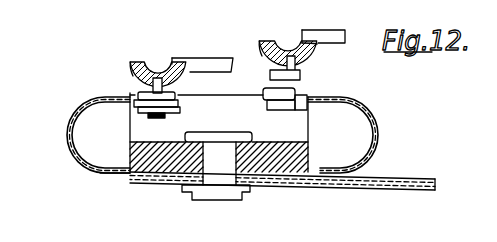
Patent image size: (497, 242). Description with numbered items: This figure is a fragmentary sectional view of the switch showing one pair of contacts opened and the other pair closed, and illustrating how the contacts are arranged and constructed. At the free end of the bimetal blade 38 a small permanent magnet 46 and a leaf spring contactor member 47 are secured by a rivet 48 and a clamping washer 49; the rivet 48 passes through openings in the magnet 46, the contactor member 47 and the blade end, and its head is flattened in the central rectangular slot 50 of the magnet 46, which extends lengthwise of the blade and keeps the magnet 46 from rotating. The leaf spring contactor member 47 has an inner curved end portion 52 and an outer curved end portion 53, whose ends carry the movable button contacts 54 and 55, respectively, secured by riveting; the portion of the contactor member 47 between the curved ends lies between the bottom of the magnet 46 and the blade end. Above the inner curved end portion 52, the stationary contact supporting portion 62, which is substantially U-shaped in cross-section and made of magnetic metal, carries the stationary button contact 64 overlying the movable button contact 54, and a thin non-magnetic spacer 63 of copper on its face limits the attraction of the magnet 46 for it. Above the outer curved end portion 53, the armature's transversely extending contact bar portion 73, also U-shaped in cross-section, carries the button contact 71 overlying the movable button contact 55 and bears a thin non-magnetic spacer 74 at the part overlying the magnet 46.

The bimetal blade 38 is at (372, 189).
The permanent magnet 46 is at (152, 185).
The leaf spring contactor member 47 is at (113, 175).
The rivet 48 is at (222, 175).
The clamping washer 49 is at (250, 186).
The central rectangular slot 50 is at (295, 123).
The inner curved end portion 52 is at (377, 142).
The outer curved end portion 53 is at (68, 125).
The movable button contact 54 is at (300, 97).
The movable button contact 55 is at (133, 97).
The stationary contact supporting portion 62 is at (277, 42).
The non-magnetic spacer 63 is at (258, 53).
The stationary button contact 64 is at (302, 68).
The button contact 71 is at (176, 98).
The contact bar portion 73 is at (142, 63).
The non-magnetic spacer 74 is at (131, 67).